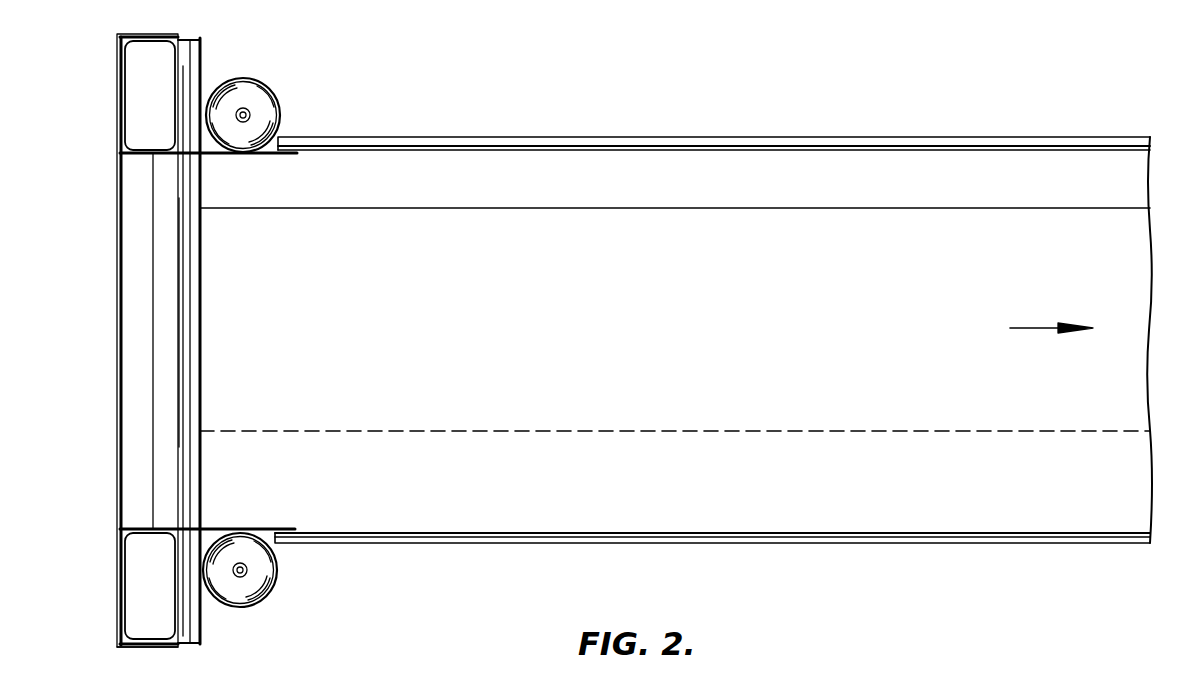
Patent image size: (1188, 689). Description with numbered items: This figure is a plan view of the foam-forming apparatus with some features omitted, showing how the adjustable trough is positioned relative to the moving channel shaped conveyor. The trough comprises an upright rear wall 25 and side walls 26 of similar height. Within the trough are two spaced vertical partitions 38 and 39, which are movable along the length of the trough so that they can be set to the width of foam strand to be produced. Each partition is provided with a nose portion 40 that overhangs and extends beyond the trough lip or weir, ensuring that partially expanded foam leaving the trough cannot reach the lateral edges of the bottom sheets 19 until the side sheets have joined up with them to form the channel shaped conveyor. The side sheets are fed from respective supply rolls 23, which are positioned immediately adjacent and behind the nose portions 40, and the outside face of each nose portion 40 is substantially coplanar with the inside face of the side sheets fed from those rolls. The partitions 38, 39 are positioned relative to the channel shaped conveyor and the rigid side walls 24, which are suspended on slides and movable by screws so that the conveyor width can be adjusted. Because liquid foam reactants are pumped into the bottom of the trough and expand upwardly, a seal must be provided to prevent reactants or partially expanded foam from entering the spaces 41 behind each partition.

The bottom sheets 19 is at (656, 208).
The supply rolls 23 is at (268, 105).
The side walls 24 is at (485, 137).
The rear wall 25 is at (118, 350).
The side walls 26 is at (138, 648).
The vertical partition 38 is at (118, 155).
The vertical partition 39 is at (118, 529).
The nose portion 40 is at (188, 158).
The spaces 41 is at (138, 115).